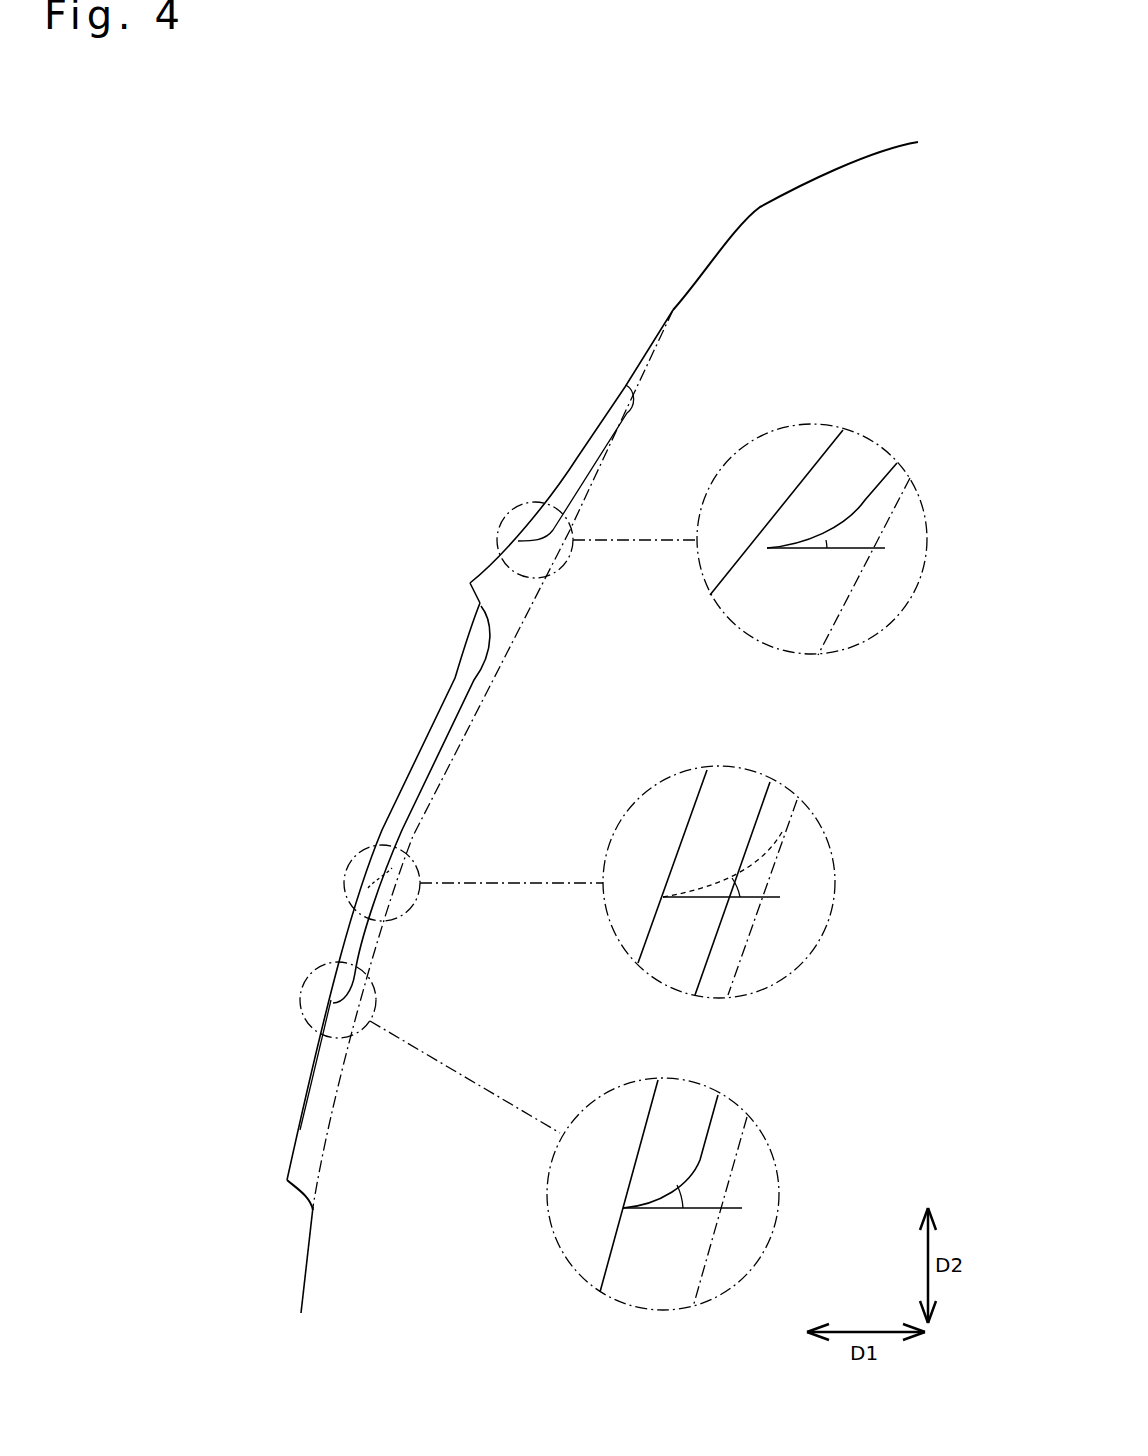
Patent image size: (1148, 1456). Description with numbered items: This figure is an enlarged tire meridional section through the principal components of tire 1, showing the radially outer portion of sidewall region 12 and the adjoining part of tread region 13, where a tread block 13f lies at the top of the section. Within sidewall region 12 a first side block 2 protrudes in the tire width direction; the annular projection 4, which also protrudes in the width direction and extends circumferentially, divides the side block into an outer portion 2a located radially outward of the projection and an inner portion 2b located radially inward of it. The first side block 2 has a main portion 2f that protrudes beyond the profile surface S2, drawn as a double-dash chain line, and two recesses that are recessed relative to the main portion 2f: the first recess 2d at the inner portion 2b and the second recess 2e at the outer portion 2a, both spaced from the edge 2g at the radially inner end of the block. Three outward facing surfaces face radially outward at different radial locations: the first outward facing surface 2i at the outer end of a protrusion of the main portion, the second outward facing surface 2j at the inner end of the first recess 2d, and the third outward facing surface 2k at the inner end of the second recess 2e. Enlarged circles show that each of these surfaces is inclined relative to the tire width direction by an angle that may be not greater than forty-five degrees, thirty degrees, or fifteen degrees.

The tire 1 is at (145, 130).
The sidewall region 12 is at (305, 527).
The tread region 13 is at (848, 142).
The tread block 13f is at (900, 142).
The first side block 2 is at (447, 663).
The outer portion 2a is at (645, 355).
The inner portion 2b is at (303, 1112).
The first recess 2d is at (418, 738).
The second recess 2e is at (590, 448).
The main portion 2f is at (312, 1063).
The edge of inner end 2g is at (303, 1200).
The first outward facing surface 2i is at (372, 880).
The second outward facing surface 2j is at (337, 1000).
The third outward facing surface 2k is at (522, 522).
The annular projection 4 is at (468, 572).
The profile surface S2 is at (318, 1150).